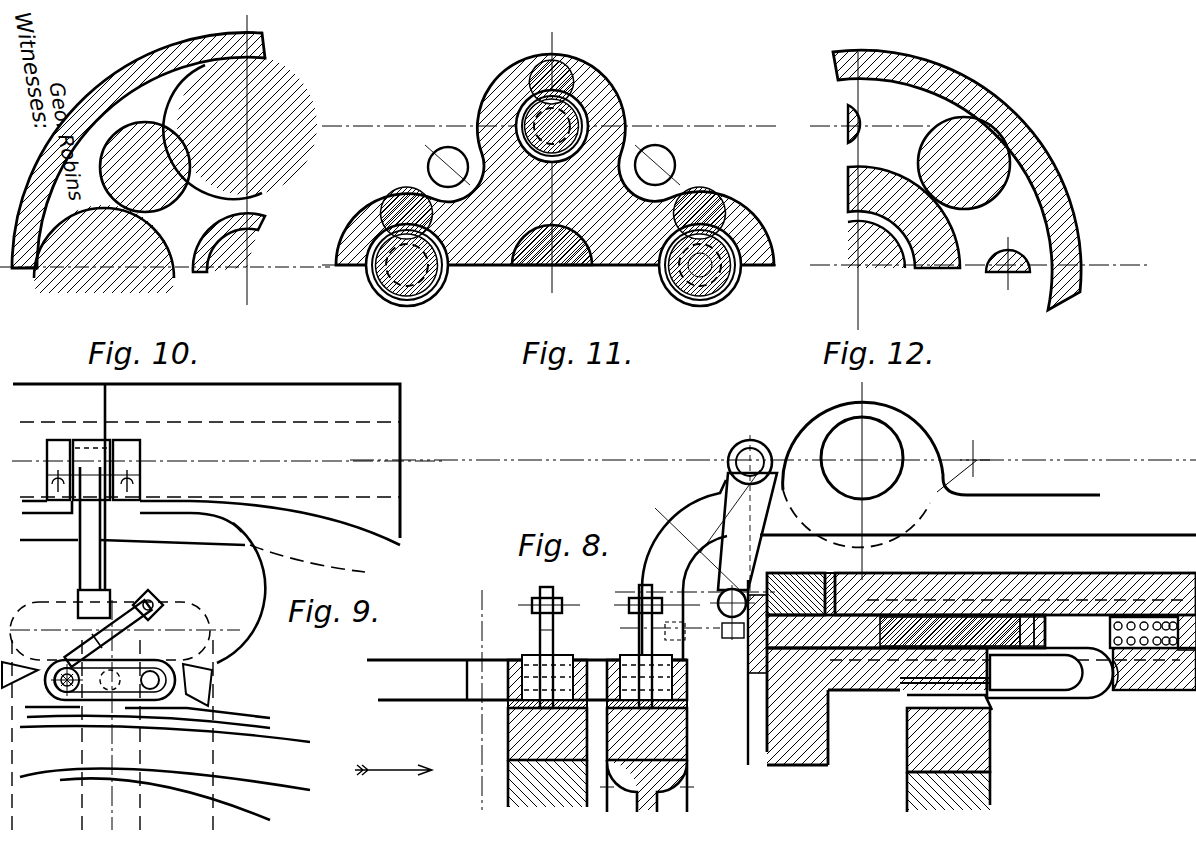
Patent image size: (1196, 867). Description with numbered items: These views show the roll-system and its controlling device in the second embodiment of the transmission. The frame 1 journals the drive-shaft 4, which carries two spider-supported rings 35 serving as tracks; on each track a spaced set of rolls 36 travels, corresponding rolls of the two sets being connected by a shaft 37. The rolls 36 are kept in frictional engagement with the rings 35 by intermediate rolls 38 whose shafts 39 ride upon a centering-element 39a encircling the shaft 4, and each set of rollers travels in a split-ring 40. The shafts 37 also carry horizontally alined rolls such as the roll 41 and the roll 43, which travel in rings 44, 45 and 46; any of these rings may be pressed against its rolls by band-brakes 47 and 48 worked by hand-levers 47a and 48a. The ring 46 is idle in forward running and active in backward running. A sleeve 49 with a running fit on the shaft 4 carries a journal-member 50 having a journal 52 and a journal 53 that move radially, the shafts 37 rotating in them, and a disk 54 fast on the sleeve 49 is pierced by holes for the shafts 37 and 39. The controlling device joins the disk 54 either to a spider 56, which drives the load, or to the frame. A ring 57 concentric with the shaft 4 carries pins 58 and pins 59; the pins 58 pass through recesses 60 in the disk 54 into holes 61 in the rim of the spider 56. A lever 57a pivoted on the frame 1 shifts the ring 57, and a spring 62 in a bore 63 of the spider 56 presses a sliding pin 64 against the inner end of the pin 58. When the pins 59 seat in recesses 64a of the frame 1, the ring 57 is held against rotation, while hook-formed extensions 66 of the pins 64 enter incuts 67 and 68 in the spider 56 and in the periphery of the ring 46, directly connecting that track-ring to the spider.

In FIG. 9, the frame 1 is at (387, 448).
In FIG. 8, the frame 1 is at (1028, 508).
In FIG. 10, the drive-shaft 4 is at (256, 265).
In FIG. 10, the spider-supported ring 35 is at (254, 53).
In FIG. 10, the roll 36 is at (262, 97).
In FIG. 11, the shaft 37 is at (588, 124).
In FIG. 12, the shaft 37 is at (878, 116).
In FIG. 10, the intermediate roll 38 is at (146, 123).
In FIG. 11, the shaft 39 is at (440, 160).
In FIG. 12, the shaft 39 is at (990, 192).
In FIG. 12, the centering-element 39a is at (998, 284).
In FIG. 12, the split-ring 40 is at (1058, 174).
In FIG. 8, the roll 41 is at (510, 788).
In FIG. 8, the roll 43 is at (907, 793).
In FIG. 8, the ring 44 is at (510, 741).
In FIG. 9, the ring 45 is at (272, 766).
In FIG. 8, the ring 45 is at (688, 742).
In FIG. 8, the ring 46 is at (990, 745).
In FIG. 8, the band-brake 47 is at (510, 713).
In FIG. 8, the hand-lever 47a is at (540, 627).
In FIG. 9, the band-brake 48 is at (268, 716).
In FIG. 8, the band-brake 48 is at (690, 712).
In FIG. 9, the hand-lever 48a is at (152, 602).
In FIG. 8, the hand-lever 48a is at (630, 626).
In FIG. 10, the sleeve 49 is at (255, 222).
In FIG. 12, the sleeve 49 is at (902, 280).
In FIG. 11, the journal-member 50 is at (690, 210).
In FIG. 11, the journal 52 is at (588, 112).
In FIG. 11, the journal 53 is at (705, 298).
In FIG. 8, the disk 54 is at (820, 738).
In FIG. 8, the spider 56 is at (975, 592).
In FIG. 8, the ring 57 is at (748, 690).
In FIG. 9, the lever 57a is at (92, 566).
In FIG. 8, the lever 57a is at (748, 572).
In FIG. 8, the pin 58 is at (870, 592).
In FIG. 8, the pin 59 is at (732, 625).
In FIG. 8, the recess 60 is at (800, 612).
In FIG. 8, the hole 61 is at (833, 605).
In FIG. 8, the spring 62 is at (1168, 700).
In FIG. 8, the bore 63 is at (1128, 692).
In FIG. 8, the sliding pin 64 is at (1022, 605).
In FIG. 8, the recess 64a is at (695, 570).
In FIG. 8, the hook-formed extension 66 is at (1043, 693).
In FIG. 8, the incut 67 is at (905, 700).
In FIG. 8, the incut 68 is at (990, 712).